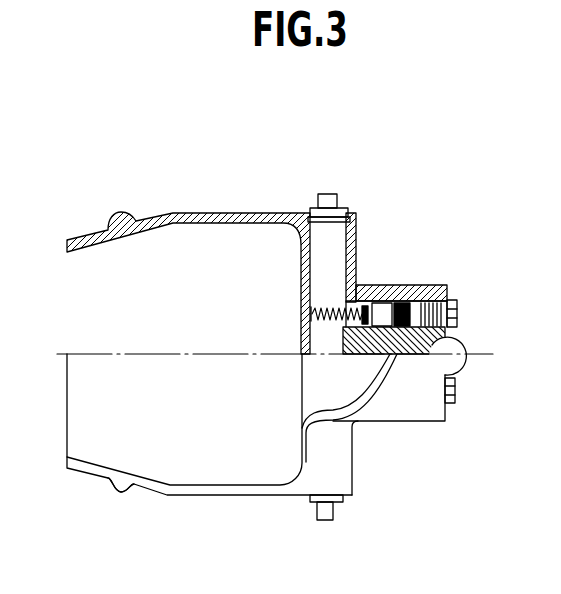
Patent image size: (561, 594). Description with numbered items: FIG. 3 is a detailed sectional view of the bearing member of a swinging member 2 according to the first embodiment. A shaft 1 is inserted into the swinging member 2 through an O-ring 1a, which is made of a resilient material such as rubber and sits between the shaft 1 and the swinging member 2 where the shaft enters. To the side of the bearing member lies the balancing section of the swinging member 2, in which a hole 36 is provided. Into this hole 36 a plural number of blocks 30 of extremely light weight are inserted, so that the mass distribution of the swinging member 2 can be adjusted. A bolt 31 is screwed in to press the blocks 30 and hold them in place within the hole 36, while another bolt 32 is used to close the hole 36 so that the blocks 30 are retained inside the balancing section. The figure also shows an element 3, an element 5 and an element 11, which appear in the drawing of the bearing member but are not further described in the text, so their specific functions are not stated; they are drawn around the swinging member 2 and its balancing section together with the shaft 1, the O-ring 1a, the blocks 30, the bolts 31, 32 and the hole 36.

The shaft 1 is at (326, 193).
The O-ring 1a is at (338, 220).
The swinging member 2 is at (272, 497).
The support member 3 is at (413, 412).
The bottom wall of housing 5 is at (150, 487).
The shaft axis 11 is at (463, 343).
The blocks 30 is at (373, 305).
The bolt 31 is at (425, 300).
The bolt 32 is at (458, 306).
The hole 36 is at (456, 334).